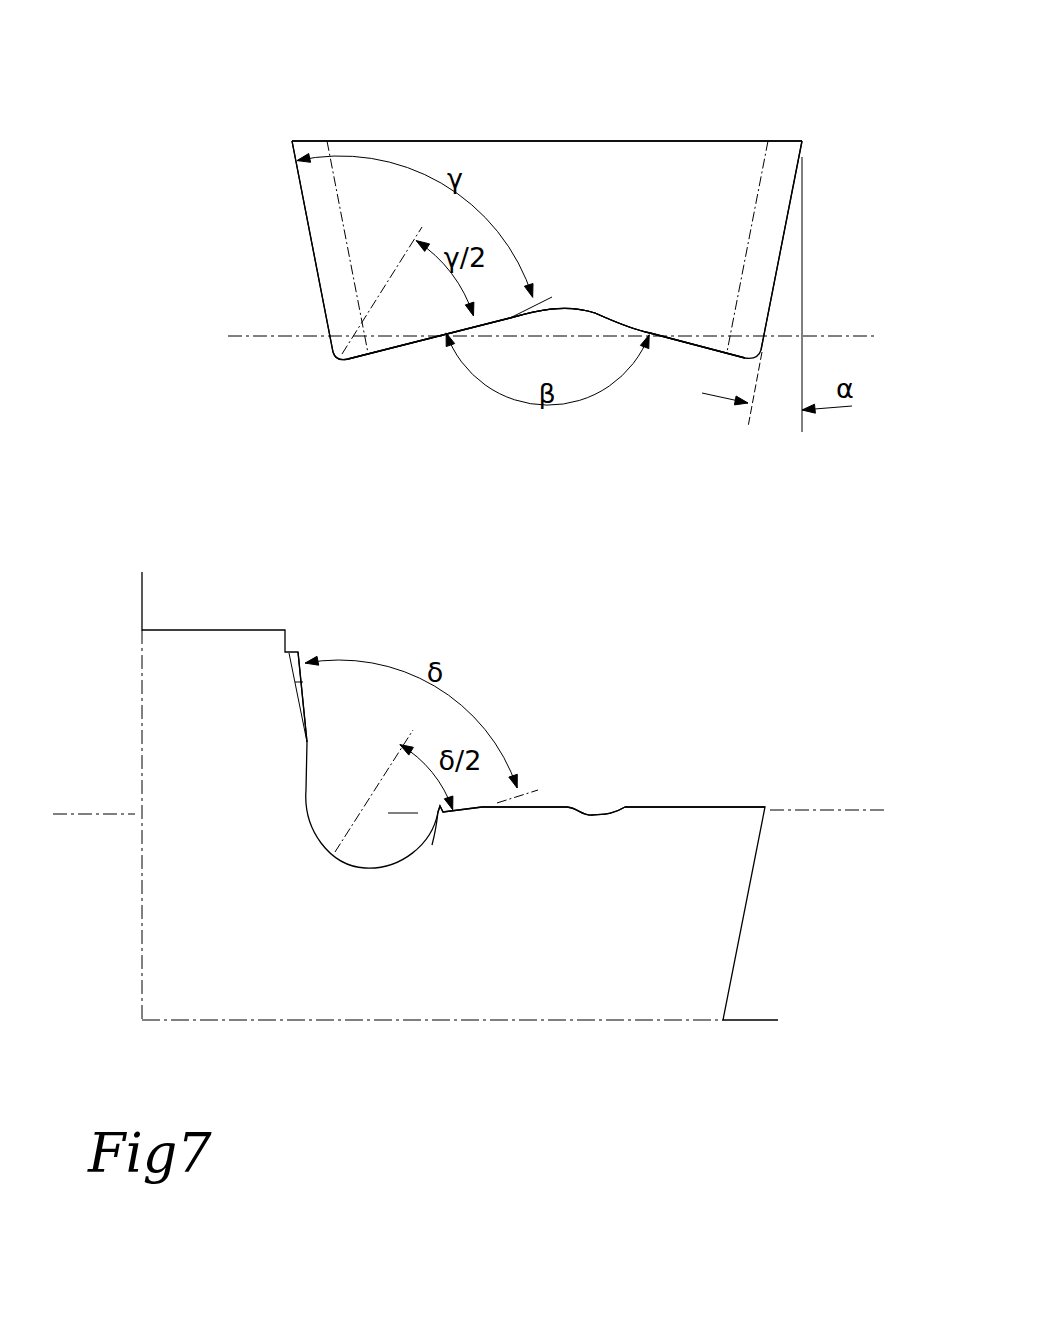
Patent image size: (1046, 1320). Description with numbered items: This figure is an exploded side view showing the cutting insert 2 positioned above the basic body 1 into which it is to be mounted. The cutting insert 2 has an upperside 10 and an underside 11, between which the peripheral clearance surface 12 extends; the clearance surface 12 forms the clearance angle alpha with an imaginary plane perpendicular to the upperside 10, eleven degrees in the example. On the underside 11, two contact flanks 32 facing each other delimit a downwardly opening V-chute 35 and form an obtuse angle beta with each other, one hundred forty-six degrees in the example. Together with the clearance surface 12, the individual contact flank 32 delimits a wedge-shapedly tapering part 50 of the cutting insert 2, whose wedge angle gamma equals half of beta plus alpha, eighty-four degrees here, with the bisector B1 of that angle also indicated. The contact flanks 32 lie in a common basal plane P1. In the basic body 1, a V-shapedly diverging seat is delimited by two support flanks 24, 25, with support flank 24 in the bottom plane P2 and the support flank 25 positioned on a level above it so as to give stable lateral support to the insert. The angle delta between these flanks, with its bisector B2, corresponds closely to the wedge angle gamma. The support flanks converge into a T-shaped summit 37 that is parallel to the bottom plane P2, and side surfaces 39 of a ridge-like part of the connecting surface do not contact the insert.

The basic body 1 is at (772, 943).
The cutting insert 2 is at (735, 88).
The upperside 10 is at (526, 140).
The underside 11 is at (523, 346).
The clearance surface 12 is at (314, 248).
The support flank 24 is at (435, 814).
The support flank 25 is at (305, 683).
The contact flank 32 is at (402, 343).
The chute 35 is at (616, 335).
The summit 37 is at (553, 800).
The side surface 39 is at (596, 812).
The wedge-shapedly tapering part 50 is at (343, 317).
The basal plane P1 is at (551, 319).
The bottom plane P2 is at (470, 797).
The bisector of insert angle B1 is at (394, 273).
The bisector of holder angle B2 is at (388, 764).